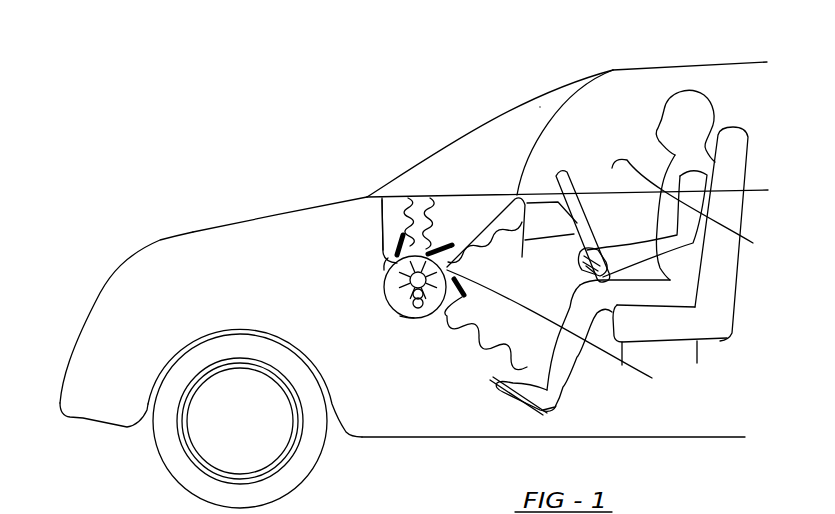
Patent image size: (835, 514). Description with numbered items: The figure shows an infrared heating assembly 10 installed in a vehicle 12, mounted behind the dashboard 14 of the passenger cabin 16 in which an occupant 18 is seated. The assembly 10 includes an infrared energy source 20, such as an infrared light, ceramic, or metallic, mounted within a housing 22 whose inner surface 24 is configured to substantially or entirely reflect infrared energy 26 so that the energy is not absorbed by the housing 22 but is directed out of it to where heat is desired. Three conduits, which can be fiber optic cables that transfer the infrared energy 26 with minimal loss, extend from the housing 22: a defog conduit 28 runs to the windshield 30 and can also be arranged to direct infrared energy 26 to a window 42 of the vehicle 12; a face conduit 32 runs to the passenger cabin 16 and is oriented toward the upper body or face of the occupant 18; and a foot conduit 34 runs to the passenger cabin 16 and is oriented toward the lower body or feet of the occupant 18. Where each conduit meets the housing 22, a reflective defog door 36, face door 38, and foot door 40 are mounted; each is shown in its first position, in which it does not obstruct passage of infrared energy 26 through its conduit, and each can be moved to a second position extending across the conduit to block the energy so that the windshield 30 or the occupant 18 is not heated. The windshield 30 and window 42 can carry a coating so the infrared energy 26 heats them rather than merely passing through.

The infrared heating assembly 10 is at (360, 243).
The vehicle 12 is at (142, 293).
The dashboard 14 is at (535, 195).
The passenger cabin 16 is at (615, 130).
The occupant 18 is at (695, 108).
The infrared energy source 20 is at (380, 265).
The housing 22 is at (383, 264).
The inner surface 24 is at (407, 317).
The infrared energy 26 is at (430, 198).
The defog conduit 28 is at (403, 233).
The windshield 30 is at (540, 107).
The face conduit 32 is at (484, 230).
The foot conduit 34 is at (522, 257).
The defog door 36 is at (382, 197).
The face door 38 is at (460, 203).
The foot door 40 is at (652, 378).
The window 42 is at (753, 243).